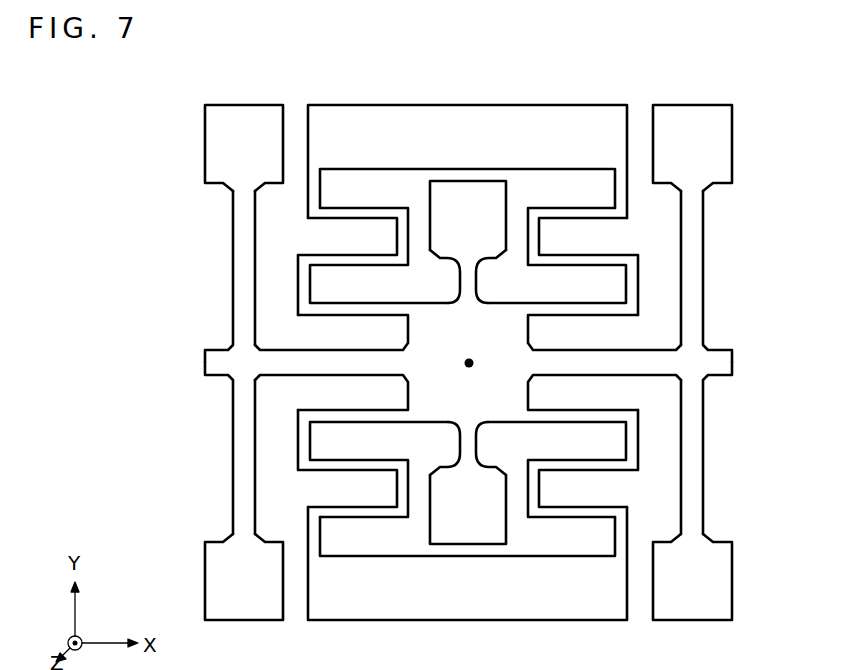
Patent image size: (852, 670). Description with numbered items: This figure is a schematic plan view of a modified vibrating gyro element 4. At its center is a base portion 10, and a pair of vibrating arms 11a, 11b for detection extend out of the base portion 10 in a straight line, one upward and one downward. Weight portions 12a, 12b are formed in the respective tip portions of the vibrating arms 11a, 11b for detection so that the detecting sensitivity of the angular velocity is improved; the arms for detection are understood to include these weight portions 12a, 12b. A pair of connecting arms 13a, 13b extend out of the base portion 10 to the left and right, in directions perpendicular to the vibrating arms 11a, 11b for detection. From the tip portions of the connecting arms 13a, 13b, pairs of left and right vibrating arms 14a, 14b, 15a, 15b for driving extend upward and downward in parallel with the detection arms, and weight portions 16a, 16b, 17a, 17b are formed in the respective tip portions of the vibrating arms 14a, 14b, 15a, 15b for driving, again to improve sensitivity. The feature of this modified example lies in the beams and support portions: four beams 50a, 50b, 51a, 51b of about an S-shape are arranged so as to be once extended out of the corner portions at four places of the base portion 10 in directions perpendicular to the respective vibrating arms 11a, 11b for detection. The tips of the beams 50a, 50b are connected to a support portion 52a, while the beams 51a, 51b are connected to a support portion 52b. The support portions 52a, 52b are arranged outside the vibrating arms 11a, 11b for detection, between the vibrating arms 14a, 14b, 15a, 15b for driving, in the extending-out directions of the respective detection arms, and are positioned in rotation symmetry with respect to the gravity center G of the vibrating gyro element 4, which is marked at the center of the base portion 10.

The vibrating gyro element 4 is at (770, 104).
The base portion 10 is at (536, 378).
The vibrating arm for detection 11a is at (478, 284).
The vibrating arm for detection 11b is at (472, 453).
The weight portion 12a is at (502, 188).
The weight portion 12b is at (498, 534).
The connecting arm 13a is at (340, 361).
The connecting arm 13b is at (590, 361).
The vibrating arm for driving 14a is at (238, 265).
The vibrating arm for driving 14b is at (238, 458).
The vibrating arm for driving 15a is at (700, 265).
The vibrating arm for driving 15b is at (700, 458).
The weight portion 16a is at (205, 141).
The weight portion 16b is at (205, 579).
The weight portion 17a is at (732, 140).
The weight portion 17b is at (732, 580).
The beam 50a is at (396, 246).
The beam 50b is at (542, 246).
The beam 51a is at (396, 490).
The beam 51b is at (542, 490).
The support portion 52a is at (467, 105).
The support portion 52b is at (467, 621).
The gravity center G is at (468, 348).